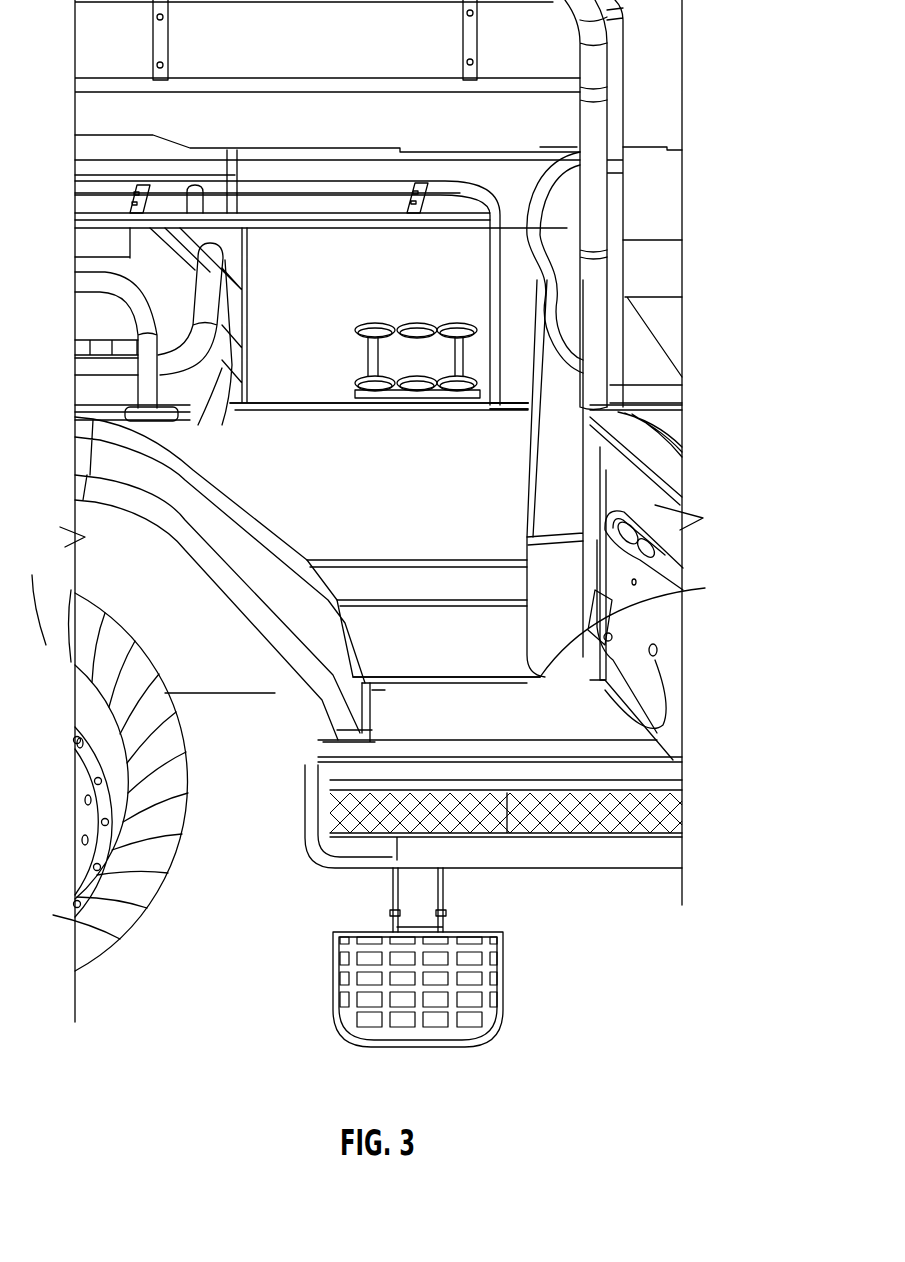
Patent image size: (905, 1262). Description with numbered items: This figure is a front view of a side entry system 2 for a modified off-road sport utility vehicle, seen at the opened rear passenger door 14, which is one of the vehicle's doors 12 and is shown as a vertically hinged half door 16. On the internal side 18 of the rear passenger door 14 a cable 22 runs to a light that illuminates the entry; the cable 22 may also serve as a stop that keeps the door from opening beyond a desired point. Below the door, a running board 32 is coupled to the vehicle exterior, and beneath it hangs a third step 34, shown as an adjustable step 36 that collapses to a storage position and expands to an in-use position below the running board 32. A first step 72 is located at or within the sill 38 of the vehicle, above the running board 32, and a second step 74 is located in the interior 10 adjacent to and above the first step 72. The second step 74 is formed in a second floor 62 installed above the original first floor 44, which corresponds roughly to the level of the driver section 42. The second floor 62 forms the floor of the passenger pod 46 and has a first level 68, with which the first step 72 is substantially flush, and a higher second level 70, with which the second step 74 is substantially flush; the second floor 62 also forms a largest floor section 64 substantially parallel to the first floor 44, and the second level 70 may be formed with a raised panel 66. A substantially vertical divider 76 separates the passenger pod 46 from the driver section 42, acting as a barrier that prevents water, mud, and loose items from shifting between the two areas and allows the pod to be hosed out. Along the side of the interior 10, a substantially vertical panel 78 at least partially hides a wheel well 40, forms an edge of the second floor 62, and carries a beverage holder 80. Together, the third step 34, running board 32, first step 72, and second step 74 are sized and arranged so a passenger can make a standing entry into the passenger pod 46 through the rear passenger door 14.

The side entry system 2 is at (727, 204).
The interior 10 is at (315, 510).
The doors 12 is at (677, 677).
The rear passenger door 14 is at (677, 732).
The half door 16 is at (677, 530).
The internal side 18 is at (638, 495).
The cable 22 is at (705, 588).
The running board 32 is at (323, 860).
The third step 34 is at (503, 952).
The adjustable step 36 is at (503, 995).
The sill 38 is at (435, 722).
The wheel well 40 is at (190, 330).
The driver section 42 is at (553, 447).
The first floor 44 is at (553, 483).
The passenger pod 46 is at (337, 172).
The second floor 62 is at (352, 467).
The largest floor section 64 is at (397, 497).
The raised panel 66 is at (437, 520).
The first level 68 is at (495, 648).
The second level 70 is at (448, 460).
The first step 72 is at (523, 740).
The second step 74 is at (377, 557).
The substantially vertical divider 76 is at (527, 513).
The substantially vertical panel 78 is at (352, 276).
The beverage holder 80 is at (413, 323).